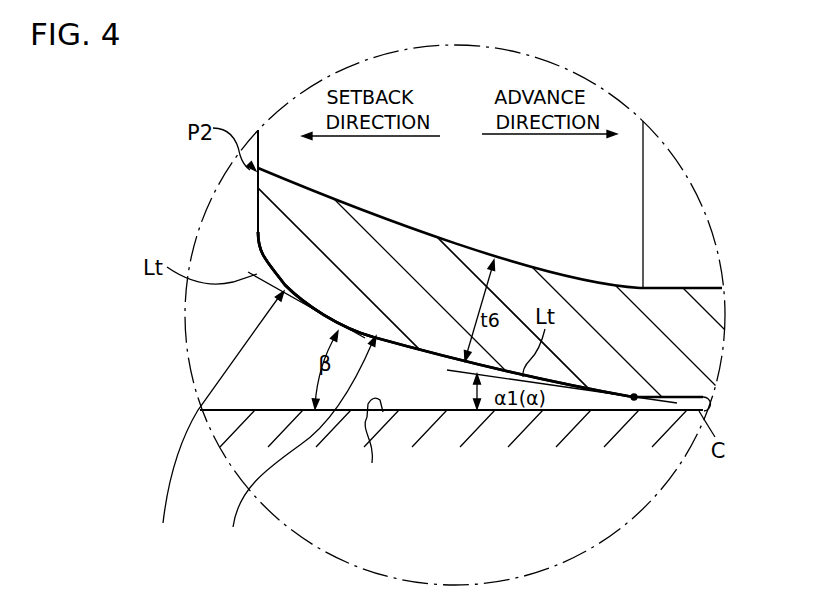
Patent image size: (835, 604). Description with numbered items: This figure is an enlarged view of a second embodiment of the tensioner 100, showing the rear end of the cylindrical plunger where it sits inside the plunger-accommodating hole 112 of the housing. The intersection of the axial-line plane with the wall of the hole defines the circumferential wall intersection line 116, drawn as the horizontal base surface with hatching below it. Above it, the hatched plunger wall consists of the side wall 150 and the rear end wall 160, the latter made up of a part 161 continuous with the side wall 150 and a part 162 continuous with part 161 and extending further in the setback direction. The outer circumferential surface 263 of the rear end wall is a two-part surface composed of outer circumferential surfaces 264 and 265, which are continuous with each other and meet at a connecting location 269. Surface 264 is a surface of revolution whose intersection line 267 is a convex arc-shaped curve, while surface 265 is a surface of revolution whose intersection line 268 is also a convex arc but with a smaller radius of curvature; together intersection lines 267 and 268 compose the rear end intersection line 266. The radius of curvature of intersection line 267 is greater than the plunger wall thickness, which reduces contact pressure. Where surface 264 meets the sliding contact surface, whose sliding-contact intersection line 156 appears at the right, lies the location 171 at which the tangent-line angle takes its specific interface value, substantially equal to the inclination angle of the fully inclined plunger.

The tensioner 100 is at (220, 238).
The plunger-accommodating hole 112 is at (205, 357).
The circumferential wall intersection line 116 is at (380, 453).
The side wall 150 is at (687, 315).
The sliding-contact intersection line 156 is at (706, 403).
The rear end wall 160 is at (453, 179).
The part of rear end wall 161 is at (465, 273).
The part of rear end wall 162 is at (310, 250).
The location where surface 264 meets sliding contact surface 171 is at (634, 399).
The outer circumferential surface 263 is at (260, 440).
The outer circumferential surface 264 is at (294, 445).
The outer circumferential surface 265 is at (214, 423).
The rear end intersection line 266 is at (480, 314).
The intersection line 267 is at (440, 357).
The intersection line 268 is at (257, 274).
The connecting location 269 is at (328, 320).